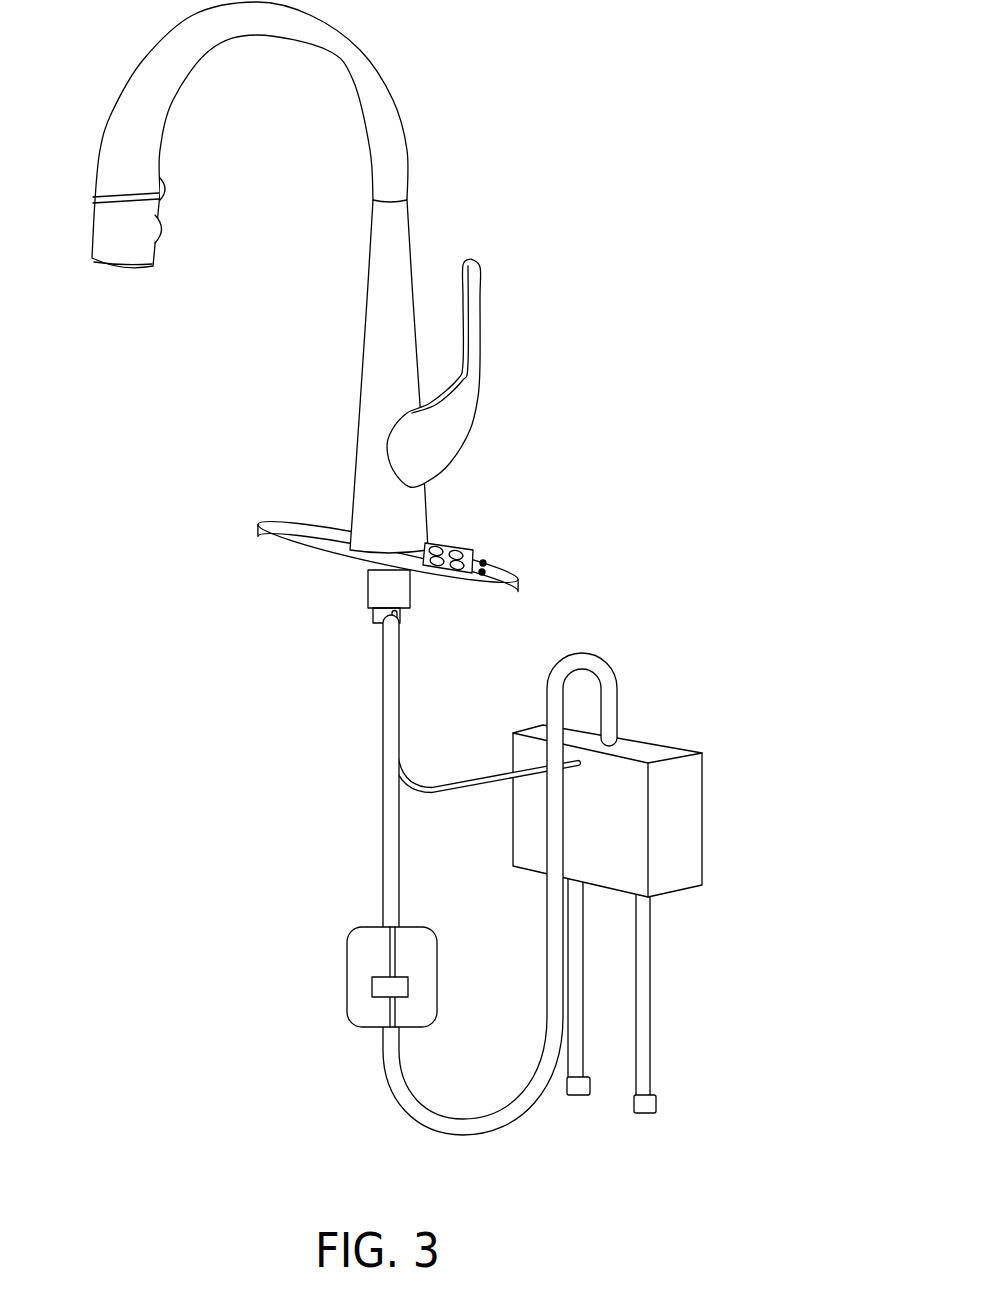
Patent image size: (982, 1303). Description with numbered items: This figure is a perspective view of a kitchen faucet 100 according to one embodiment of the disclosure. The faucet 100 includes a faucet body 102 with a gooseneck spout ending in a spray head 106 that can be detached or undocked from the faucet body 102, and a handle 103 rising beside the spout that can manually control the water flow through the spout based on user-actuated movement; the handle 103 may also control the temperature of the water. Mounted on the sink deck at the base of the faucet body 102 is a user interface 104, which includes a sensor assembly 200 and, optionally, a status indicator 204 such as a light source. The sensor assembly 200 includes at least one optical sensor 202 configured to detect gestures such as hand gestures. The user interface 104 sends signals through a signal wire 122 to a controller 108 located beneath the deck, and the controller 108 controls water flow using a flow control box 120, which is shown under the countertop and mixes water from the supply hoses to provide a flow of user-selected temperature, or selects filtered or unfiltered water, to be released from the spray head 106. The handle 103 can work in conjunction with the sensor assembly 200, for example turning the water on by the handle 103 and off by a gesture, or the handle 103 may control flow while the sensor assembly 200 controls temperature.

The faucet 100 is at (475, 118).
The faucet body 102 is at (370, 277).
The handle 103 is at (473, 290).
The user interface 104 is at (477, 553).
The spray head 106 is at (170, 28).
The controller 108 is at (360, 958).
The flow control box 120 is at (703, 792).
The signal wire 122 is at (407, 777).
The sensor assembly 200 is at (452, 552).
The optical sensor 202 is at (440, 552).
The status indicator 204 is at (487, 567).